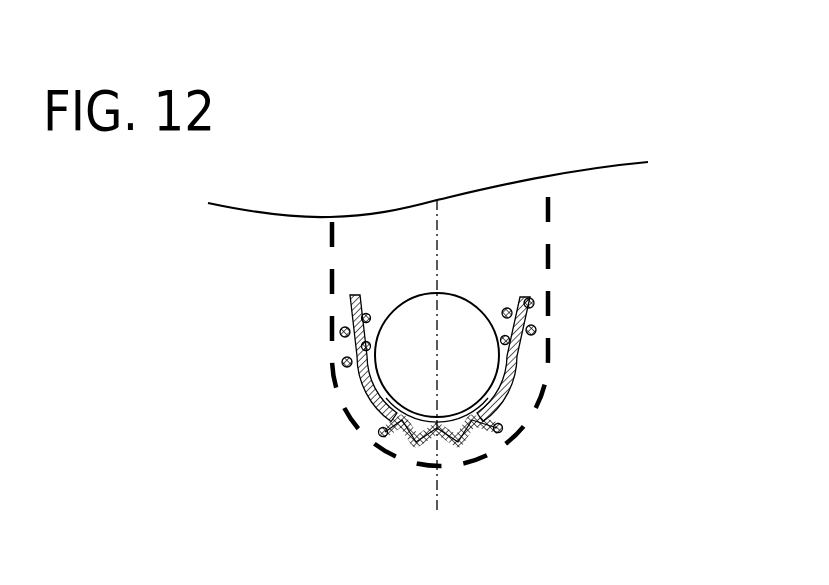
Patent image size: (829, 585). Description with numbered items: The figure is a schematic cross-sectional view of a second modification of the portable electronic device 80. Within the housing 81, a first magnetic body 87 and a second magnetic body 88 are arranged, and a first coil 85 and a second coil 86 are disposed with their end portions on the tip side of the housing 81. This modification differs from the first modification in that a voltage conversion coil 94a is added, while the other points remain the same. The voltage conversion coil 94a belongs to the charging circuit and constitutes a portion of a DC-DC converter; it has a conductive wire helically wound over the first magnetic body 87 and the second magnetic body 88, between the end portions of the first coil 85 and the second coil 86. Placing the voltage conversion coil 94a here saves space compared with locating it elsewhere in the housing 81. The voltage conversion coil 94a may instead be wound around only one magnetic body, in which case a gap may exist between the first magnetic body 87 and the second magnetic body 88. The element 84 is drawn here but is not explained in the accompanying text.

The portable electronic device 80 is at (298, 329).
The housing 81 is at (331, 272).
The rod-shaped member 84 is at (415, 292).
The first coil 85 is at (345, 357).
The second coil 86 is at (538, 336).
The first magnetic body 87 is at (365, 402).
The second magnetic body 88 is at (515, 383).
The voltage conversion coil 94a is at (383, 434).